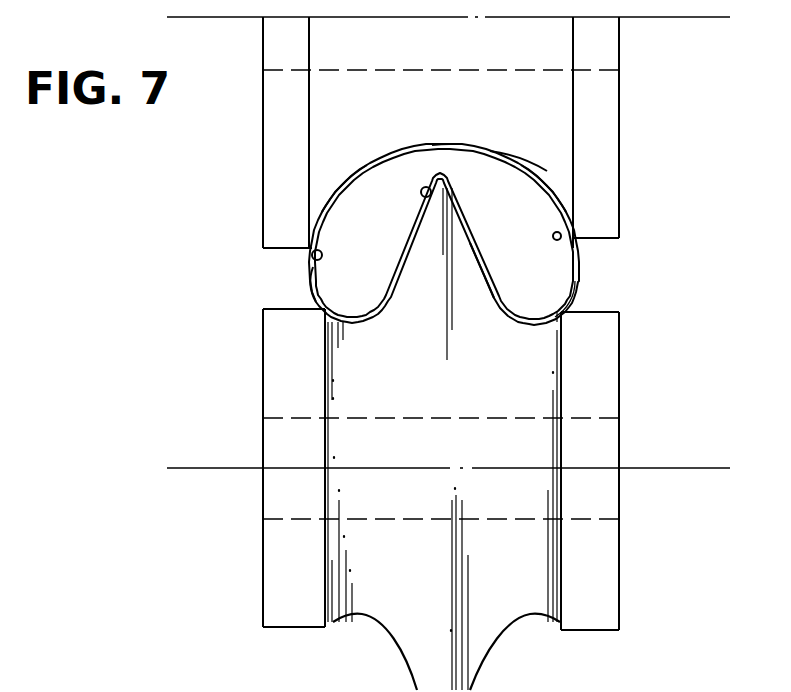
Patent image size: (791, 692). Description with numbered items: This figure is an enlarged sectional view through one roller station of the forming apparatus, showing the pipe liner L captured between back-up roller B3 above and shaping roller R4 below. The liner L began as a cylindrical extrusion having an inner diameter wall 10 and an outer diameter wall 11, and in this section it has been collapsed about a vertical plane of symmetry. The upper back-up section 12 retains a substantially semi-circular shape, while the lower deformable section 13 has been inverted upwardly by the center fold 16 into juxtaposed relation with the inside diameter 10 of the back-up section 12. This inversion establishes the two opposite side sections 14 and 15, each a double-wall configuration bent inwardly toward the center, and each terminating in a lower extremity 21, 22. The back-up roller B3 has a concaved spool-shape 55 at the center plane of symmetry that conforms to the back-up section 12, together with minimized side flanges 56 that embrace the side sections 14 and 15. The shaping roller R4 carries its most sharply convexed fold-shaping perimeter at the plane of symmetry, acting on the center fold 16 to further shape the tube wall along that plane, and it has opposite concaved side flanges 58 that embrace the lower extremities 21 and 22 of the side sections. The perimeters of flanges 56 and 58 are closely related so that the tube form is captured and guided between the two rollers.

The inner diameter wall 10 is at (553, 238).
The outer diameter wall 11 is at (586, 249).
The upper back-up section 12 is at (438, 134).
The lower deformable section 13 is at (494, 311).
The side section 14 is at (363, 172).
The side section 15 is at (527, 173).
The center fold 16 is at (420, 196).
The lower extremity of side section 21 is at (310, 294).
The lower extremity of side section 22 is at (568, 306).
The concaved spool-shape 55 is at (456, 148).
The side flanges 56 is at (308, 258).
The concaved side flanges 58 is at (327, 626).
The back-up roller B3 is at (280, 136).
The shaping roller R4 is at (283, 339).
The pipe liner L is at (560, 192).